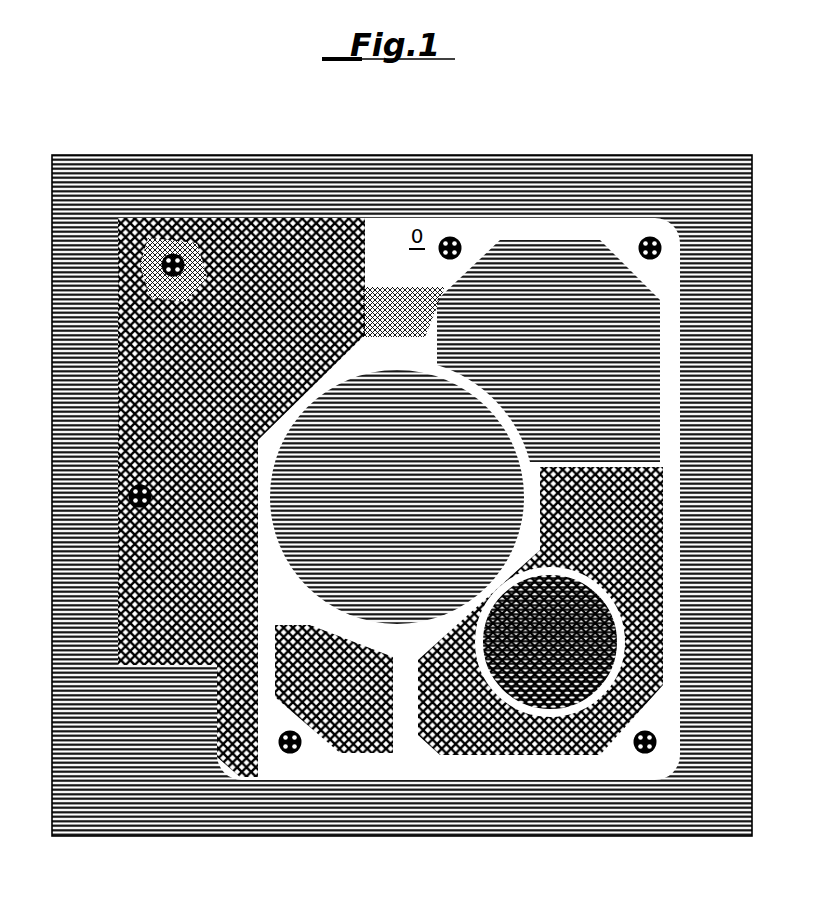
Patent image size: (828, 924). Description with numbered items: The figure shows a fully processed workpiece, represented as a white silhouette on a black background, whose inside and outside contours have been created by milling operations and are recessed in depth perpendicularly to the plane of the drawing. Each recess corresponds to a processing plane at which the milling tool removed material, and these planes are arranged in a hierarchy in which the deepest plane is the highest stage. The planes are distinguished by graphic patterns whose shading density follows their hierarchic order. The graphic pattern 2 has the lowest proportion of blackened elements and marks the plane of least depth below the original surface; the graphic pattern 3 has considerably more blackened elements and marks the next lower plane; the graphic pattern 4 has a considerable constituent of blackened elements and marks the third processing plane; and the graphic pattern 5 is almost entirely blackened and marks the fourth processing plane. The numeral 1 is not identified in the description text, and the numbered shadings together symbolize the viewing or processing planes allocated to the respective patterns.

The hatched component section 1 is at (557, 232).
The graphic pattern 2 is at (127, 512).
The graphic pattern 3 is at (186, 240).
The graphic pattern 4 is at (240, 225).
The graphic pattern 5 is at (164, 253).